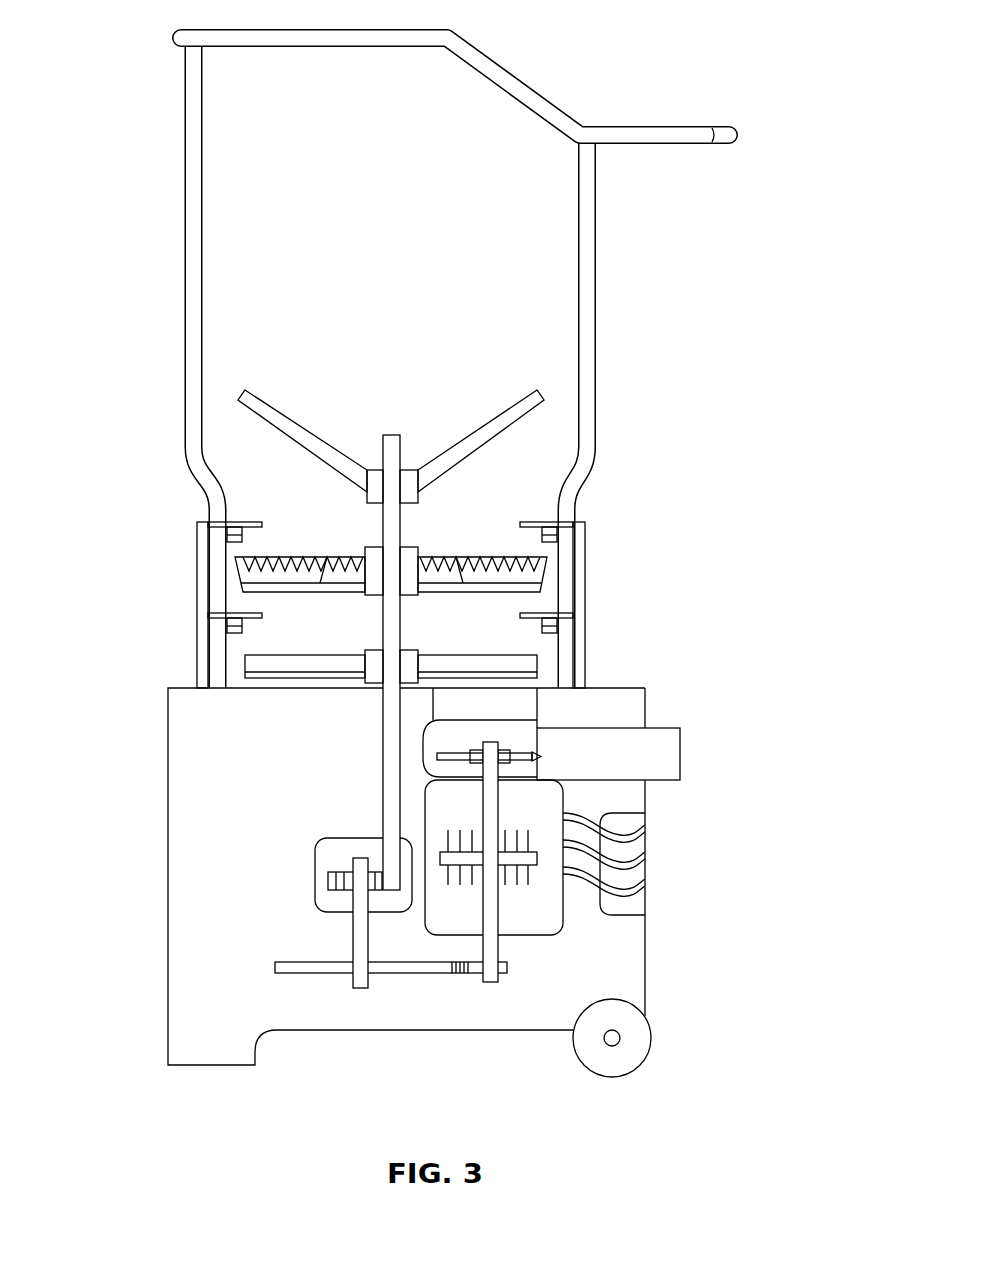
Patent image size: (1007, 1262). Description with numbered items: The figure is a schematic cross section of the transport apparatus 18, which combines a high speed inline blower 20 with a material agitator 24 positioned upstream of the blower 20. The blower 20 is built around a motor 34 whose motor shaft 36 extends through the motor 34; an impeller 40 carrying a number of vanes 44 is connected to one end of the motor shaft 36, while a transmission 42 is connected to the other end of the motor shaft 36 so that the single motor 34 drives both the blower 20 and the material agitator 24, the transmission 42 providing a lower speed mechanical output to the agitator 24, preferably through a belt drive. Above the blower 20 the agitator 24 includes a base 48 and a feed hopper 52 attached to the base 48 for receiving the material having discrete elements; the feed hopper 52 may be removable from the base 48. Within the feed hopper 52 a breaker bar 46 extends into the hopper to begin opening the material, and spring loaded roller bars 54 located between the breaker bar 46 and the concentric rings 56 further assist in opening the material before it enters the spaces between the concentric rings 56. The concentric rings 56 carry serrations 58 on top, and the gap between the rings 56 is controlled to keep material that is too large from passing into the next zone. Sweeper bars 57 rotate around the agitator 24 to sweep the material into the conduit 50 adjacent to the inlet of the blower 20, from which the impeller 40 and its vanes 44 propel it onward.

The transport apparatus 18 is at (738, 310).
The inline blower 20 is at (647, 753).
The material agitator 24 is at (254, 471).
The motor 34 is at (542, 910).
The motor shaft 36 is at (495, 817).
The impeller 40 is at (503, 750).
The transmission 42 is at (328, 863).
The vanes 44 is at (542, 757).
The breaker bar 46 is at (372, 465).
The base 48 is at (530, 400).
The conduit 50 is at (493, 688).
The feed hopper 52 is at (280, 180).
The roller bars 54 is at (233, 535).
The concentric rings 56 is at (247, 588).
The sweeper bars 57 is at (260, 668).
The serrations 58 is at (273, 578).